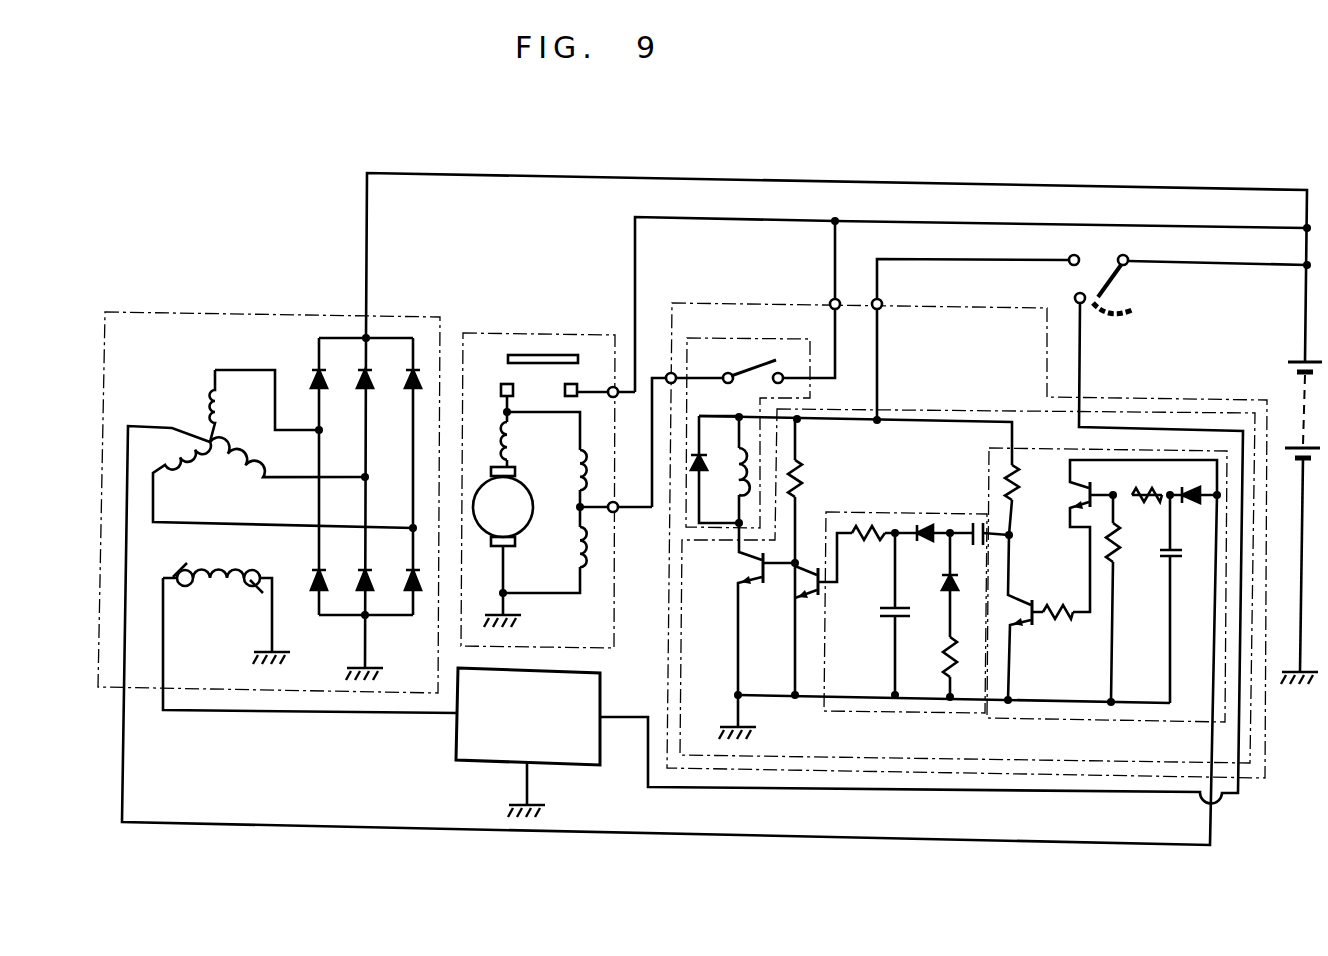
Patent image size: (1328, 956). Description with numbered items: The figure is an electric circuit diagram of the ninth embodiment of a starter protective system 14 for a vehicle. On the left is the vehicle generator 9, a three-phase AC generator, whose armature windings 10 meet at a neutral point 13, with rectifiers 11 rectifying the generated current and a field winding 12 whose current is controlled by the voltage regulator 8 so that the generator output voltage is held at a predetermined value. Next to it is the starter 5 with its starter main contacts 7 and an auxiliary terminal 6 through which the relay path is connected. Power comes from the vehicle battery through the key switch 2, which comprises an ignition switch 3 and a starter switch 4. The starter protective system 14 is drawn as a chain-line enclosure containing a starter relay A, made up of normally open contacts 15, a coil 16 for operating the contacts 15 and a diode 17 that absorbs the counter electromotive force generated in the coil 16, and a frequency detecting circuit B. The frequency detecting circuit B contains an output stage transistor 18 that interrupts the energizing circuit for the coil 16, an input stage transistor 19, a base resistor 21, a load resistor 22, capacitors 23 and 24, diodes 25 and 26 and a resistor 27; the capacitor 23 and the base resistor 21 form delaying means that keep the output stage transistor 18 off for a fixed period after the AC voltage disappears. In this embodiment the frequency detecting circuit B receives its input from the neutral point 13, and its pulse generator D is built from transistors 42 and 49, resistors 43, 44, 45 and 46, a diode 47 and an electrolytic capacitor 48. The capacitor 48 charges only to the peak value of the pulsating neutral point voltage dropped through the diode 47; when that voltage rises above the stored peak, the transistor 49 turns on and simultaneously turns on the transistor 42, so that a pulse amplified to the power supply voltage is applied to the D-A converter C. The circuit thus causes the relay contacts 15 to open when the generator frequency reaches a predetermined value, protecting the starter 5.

The key switch 2 is at (1108, 270).
The ignition switch 3 is at (1073, 296).
The starter switch 4 is at (1068, 256).
The starter 5 is at (493, 332).
The auxiliary terminal of the starter 6 is at (616, 512).
The starter main contacts 7 is at (535, 355).
The voltage regulator 8 is at (455, 752).
The generator 9 is at (232, 312).
The armature windings 10 is at (213, 395).
The rectifiers 11 is at (322, 357).
The field winding 12 is at (215, 587).
The neutral point 13 is at (208, 440).
The starter protective system 14 is at (670, 680).
The normally open contacts 15 is at (740, 372).
The coil 16 is at (737, 467).
The diode 17 is at (735, 480).
The output stage transistor 18 is at (740, 565).
The input stage transistor 19 is at (798, 580).
The base resistor 21 is at (862, 525).
The load resistor 22 is at (800, 482).
The capacitor 23 is at (878, 612).
The capacitor 24 is at (975, 522).
The diode 25 is at (925, 525).
The diode 26 is at (945, 581).
The resistor 27 is at (943, 665).
The transistor 42 is at (1025, 626).
The resistor 43 is at (1018, 486).
The resistor 44 is at (1062, 606).
The resistor 45 is at (1120, 562).
The resistor 46 is at (1146, 505).
The diode 47 is at (1191, 506).
The electrolytic capacitor 48 is at (1176, 560).
The transistor 49 is at (1068, 490).
The starter relay A is at (712, 336).
The frequency detecting circuit B is at (808, 760).
The D-A converter C is at (968, 720).
The pulse generator D is at (1158, 722).